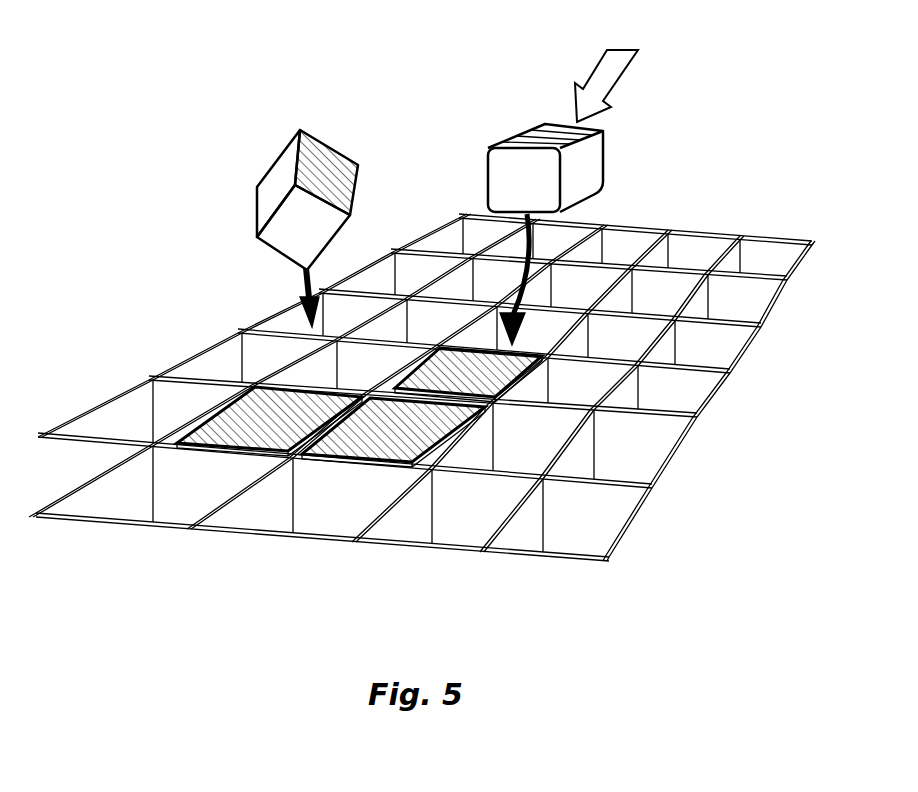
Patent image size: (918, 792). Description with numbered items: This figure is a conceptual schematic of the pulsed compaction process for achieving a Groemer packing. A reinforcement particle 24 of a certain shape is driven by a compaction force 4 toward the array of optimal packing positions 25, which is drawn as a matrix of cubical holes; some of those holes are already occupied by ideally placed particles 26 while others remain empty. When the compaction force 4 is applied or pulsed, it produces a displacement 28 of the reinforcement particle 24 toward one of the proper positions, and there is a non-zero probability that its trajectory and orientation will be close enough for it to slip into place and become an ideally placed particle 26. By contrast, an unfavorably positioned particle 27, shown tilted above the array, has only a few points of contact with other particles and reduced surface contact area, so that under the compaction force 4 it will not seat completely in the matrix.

The compaction force 4 is at (618, 67).
The reinforcement particle 24 is at (605, 153).
The array of optimal packing positions 25 is at (628, 563).
The ideally placed particle 26 is at (222, 445).
The unfavorably positioned particle 27 is at (282, 193).
The displacement of particles 28 is at (512, 250).